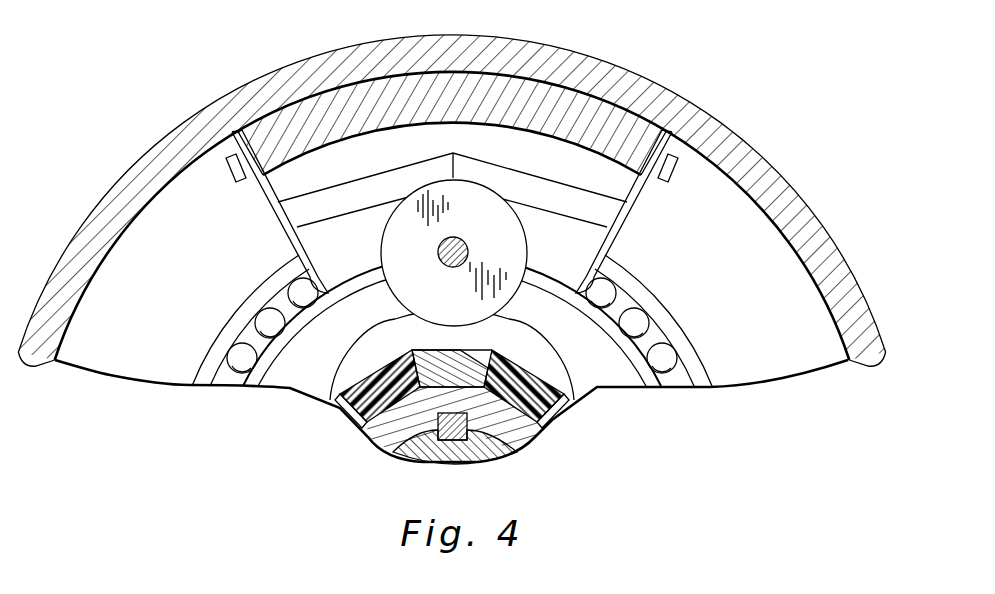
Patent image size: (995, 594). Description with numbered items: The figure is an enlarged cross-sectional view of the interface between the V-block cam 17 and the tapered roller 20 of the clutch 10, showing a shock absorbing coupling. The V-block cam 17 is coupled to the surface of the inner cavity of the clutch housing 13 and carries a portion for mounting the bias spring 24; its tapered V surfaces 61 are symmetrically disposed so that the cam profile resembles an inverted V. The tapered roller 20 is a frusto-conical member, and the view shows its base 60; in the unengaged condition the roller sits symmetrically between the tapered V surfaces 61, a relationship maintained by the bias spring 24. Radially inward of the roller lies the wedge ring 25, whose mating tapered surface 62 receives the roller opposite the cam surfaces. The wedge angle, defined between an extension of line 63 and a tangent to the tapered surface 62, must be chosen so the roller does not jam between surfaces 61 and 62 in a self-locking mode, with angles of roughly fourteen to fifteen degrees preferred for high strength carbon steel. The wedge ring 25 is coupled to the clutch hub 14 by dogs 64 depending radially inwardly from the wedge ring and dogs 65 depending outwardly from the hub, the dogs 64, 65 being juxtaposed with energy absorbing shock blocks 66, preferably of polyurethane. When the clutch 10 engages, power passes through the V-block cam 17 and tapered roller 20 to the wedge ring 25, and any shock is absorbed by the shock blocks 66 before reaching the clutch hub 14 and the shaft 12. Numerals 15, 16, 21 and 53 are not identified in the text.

The clutch 10 is at (172, 120).
The shaft 12 is at (480, 455).
The clutch housing 13 is at (663, 93).
The clutch hub 14 is at (439, 406).
The bearing balls 15 is at (667, 370).
The key block 16 is at (452, 441).
The V-block cam 17 is at (373, 88).
The tapered roller 20 is at (527, 239).
The shaft 21 is at (438, 250).
The bias spring 24 is at (618, 240).
The wedge ring 25 is at (333, 378).
The bearing race 53 is at (262, 348).
The base of tapered roller 60 is at (466, 223).
The tapered V surface 61 is at (290, 213).
The mating tapered surface 62 is at (290, 373).
The line 63 is at (560, 183).
The dogs 64 is at (343, 408).
The dogs 65 is at (460, 360).
The shock blocks 66 is at (368, 423).